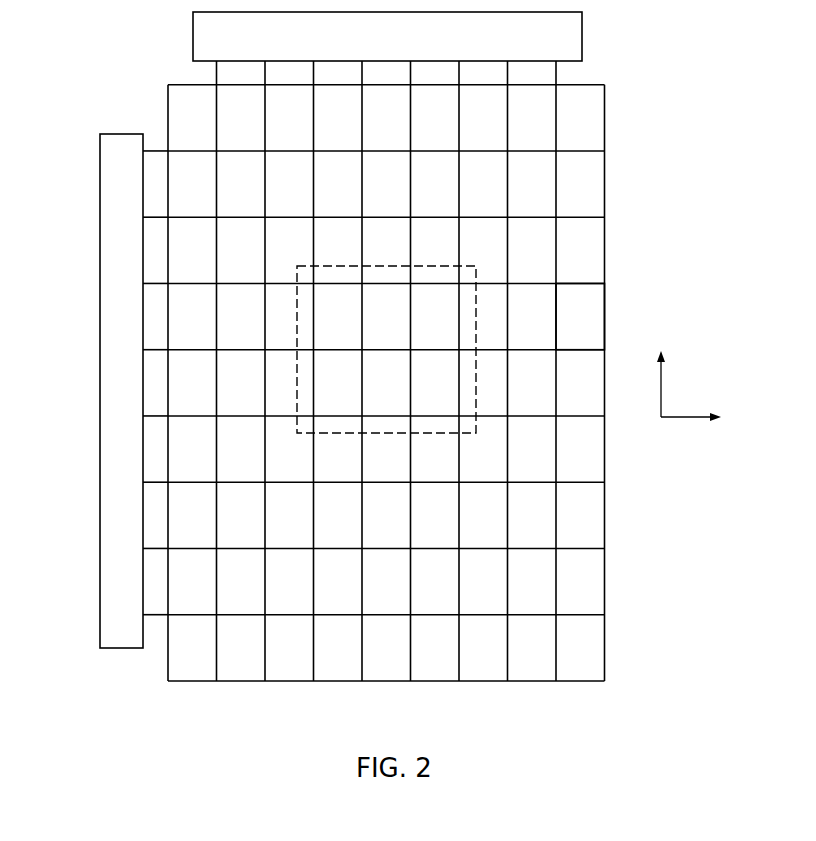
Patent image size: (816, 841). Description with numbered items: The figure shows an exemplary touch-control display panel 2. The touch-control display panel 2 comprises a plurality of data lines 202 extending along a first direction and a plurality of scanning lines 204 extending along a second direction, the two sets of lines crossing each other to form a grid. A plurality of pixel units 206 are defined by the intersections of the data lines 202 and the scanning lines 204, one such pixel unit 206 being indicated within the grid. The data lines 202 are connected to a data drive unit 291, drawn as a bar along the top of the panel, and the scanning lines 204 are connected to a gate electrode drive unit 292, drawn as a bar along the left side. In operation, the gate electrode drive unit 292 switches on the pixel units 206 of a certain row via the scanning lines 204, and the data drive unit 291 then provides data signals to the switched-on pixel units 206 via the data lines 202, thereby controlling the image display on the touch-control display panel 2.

The touch-control display panel 2 is at (107, 37).
The data drive unit 291 is at (565, 44).
The gate electrode drive unit 292 is at (106, 350).
The data line 202 is at (557, 250).
The scanning line 204 is at (573, 151).
The pixel unit 206 is at (589, 316).